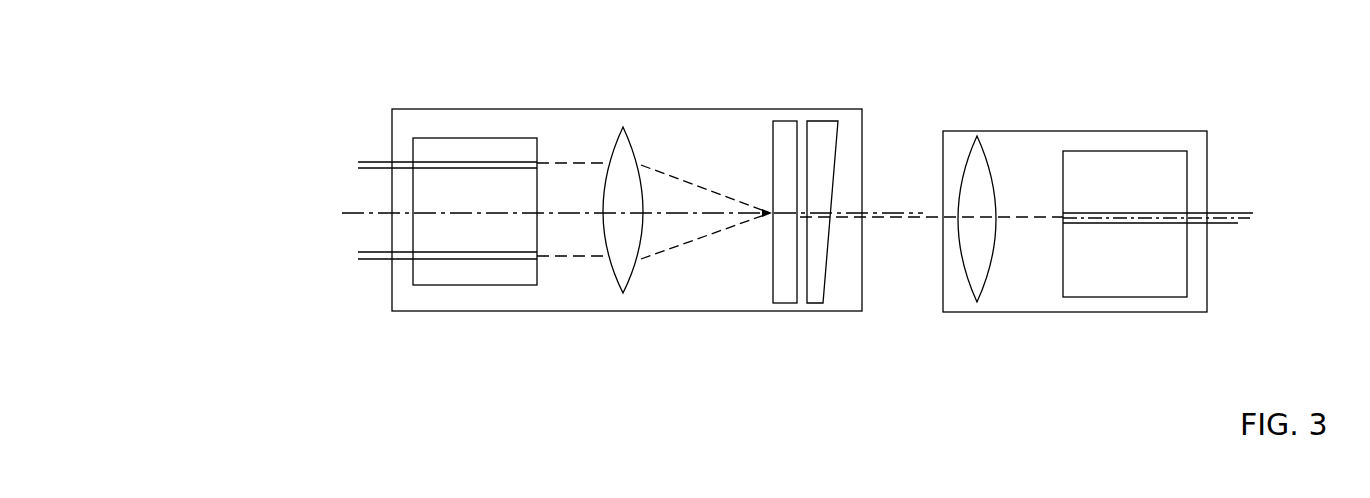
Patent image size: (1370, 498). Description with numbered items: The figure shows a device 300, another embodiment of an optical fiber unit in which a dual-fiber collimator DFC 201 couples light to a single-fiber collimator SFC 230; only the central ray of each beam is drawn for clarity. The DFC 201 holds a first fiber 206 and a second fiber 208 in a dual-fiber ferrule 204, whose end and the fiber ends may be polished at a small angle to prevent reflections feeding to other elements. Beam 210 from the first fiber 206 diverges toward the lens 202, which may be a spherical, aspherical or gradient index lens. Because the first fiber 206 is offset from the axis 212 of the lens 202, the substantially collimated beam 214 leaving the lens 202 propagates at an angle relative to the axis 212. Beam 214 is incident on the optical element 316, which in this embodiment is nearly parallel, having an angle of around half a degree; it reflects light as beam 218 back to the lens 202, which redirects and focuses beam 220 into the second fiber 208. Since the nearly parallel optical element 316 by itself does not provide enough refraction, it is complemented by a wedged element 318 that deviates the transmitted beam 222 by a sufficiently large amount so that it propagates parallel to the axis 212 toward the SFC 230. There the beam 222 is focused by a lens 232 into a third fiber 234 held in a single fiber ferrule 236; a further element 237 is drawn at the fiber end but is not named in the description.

The device 300 is at (280, 106).
The DFC 201 is at (452, 122).
The dual-fiber ferrule 204 is at (422, 137).
The first fiber 206 is at (373, 162).
The second fiber 208 is at (370, 260).
The optical axis 212 is at (353, 212).
The beam from first fiber 210 is at (579, 162).
The focused beam 220 is at (584, 258).
The lens 202 is at (630, 132).
The collimated beam 214 is at (703, 188).
The reflected beam 218 is at (693, 237).
The optical element 316 is at (784, 121).
The wedged element 318 is at (822, 121).
The transmitted beam 222 is at (902, 220).
The SFC 230 is at (1060, 130).
The lens 232 is at (970, 147).
The single fiber ferrule 236 is at (1132, 151).
The upper detector line 237 is at (1241, 215).
The third fiber 234 is at (1223, 224).